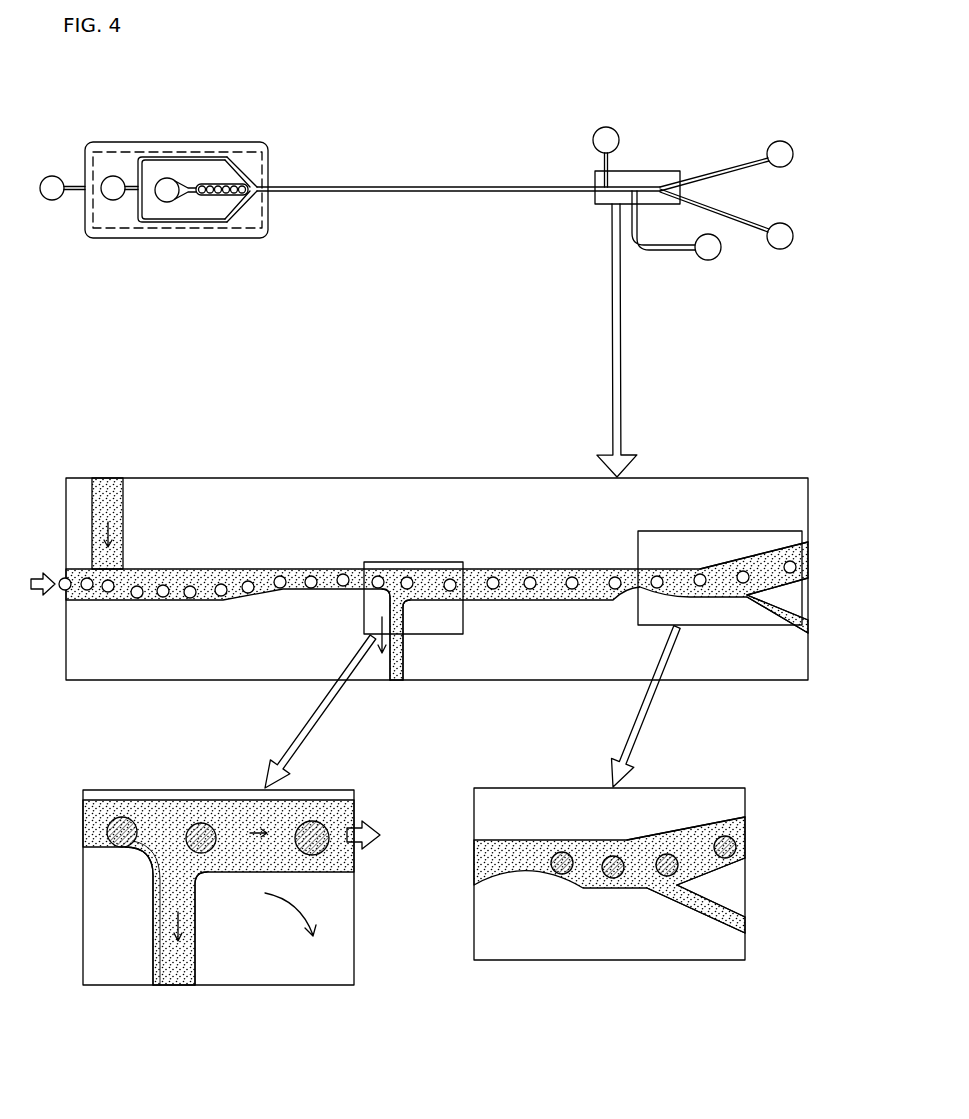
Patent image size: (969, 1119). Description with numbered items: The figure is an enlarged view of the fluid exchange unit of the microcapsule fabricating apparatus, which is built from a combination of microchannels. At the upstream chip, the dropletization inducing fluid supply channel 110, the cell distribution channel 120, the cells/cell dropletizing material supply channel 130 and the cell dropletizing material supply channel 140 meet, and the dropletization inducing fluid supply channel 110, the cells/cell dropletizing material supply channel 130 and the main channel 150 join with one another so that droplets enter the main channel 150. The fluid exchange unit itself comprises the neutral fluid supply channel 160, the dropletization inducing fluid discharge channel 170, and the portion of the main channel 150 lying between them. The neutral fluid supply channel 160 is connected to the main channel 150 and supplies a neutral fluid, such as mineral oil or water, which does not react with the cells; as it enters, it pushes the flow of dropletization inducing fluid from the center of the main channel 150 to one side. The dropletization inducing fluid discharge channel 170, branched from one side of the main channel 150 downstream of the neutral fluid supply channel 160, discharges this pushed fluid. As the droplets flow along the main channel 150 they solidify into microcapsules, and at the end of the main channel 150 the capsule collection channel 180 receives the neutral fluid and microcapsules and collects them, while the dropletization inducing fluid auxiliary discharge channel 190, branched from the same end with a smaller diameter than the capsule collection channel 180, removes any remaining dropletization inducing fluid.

The dropletization inducing fluid supply channel 110 is at (102, 140).
The cell distribution channel 120 is at (232, 178).
The cells/cell dropletizing material supply channel 130 is at (268, 205).
The cell dropletizing material supply channel 140 is at (165, 222).
The main channel 150 is at (400, 186).
The neutral fluid supply channel 160 is at (598, 163).
The dropletization inducing fluid discharge channel 170 is at (662, 253).
The capsule collection channel 180 is at (722, 167).
The dropletization inducing fluid auxiliary discharge channel 190 is at (745, 218).